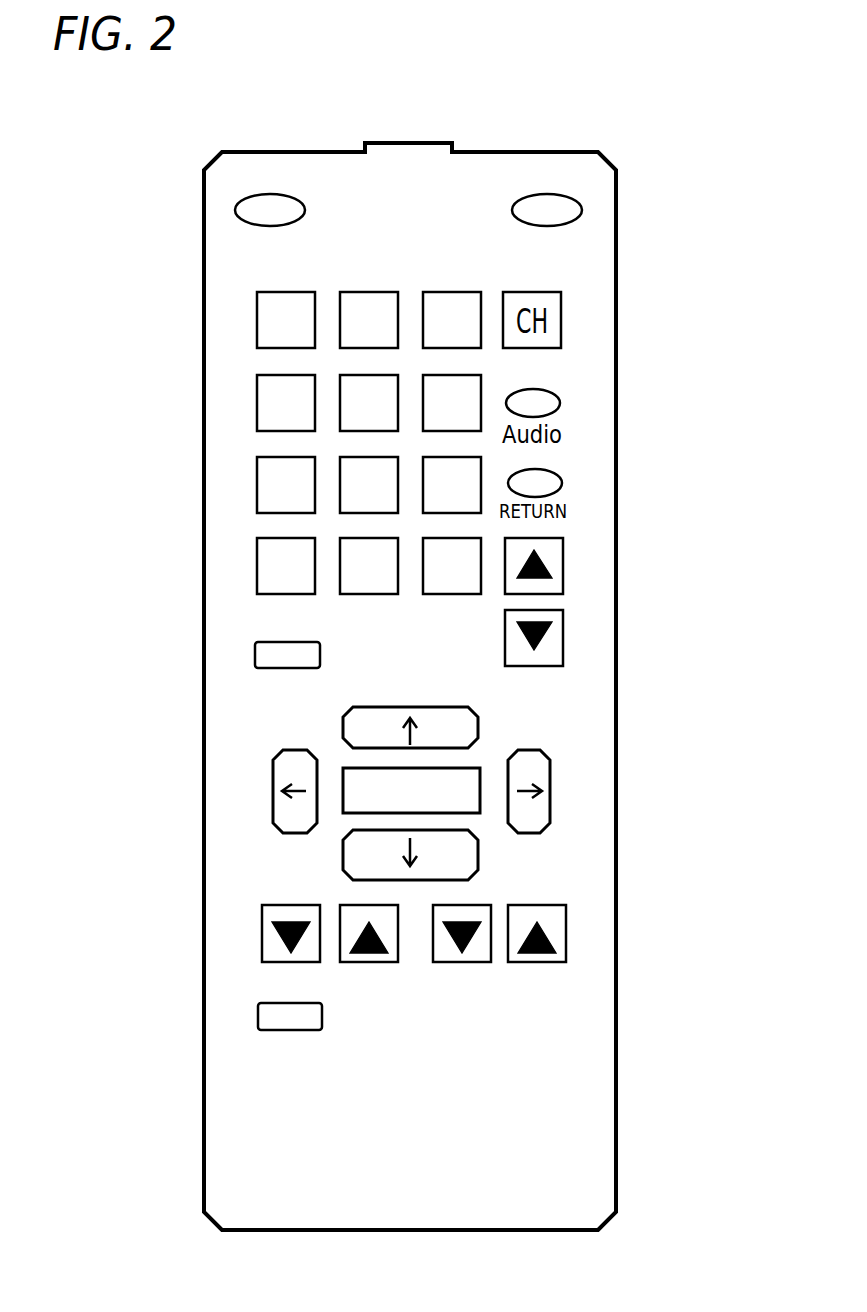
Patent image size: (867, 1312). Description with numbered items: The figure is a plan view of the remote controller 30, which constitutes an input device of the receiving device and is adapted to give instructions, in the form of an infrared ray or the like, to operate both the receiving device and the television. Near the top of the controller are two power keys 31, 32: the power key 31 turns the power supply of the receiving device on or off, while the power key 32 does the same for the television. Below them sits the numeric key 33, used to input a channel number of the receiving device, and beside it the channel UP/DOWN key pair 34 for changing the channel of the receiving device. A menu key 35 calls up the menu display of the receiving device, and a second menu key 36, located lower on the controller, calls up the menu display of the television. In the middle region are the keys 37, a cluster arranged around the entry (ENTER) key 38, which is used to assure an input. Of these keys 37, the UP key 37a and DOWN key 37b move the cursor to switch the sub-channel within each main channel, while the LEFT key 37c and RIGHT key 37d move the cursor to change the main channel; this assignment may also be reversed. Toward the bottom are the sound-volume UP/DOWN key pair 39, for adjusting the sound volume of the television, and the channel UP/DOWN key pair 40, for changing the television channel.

The remote controller 30 is at (433, 72).
The power key 31 is at (543, 194).
The power key 32 is at (278, 194).
The numeric key 33 is at (250, 280).
The channel UP/DOWN key pair 34 is at (570, 527).
The menu key 35 is at (255, 656).
The menu key 36 is at (258, 1017).
The keys 37 is at (451, 787).
The UP key 37a is at (480, 726).
The DOWN key 37b is at (480, 852).
The LEFT key 37c is at (273, 791).
The RIGHT key 37d is at (550, 775).
The entry (ENTER) key 38 is at (350, 813).
The sound-volume UP/DOWN key pair 39 is at (262, 983).
The channel UP/DOWN key pair 40 is at (570, 983).